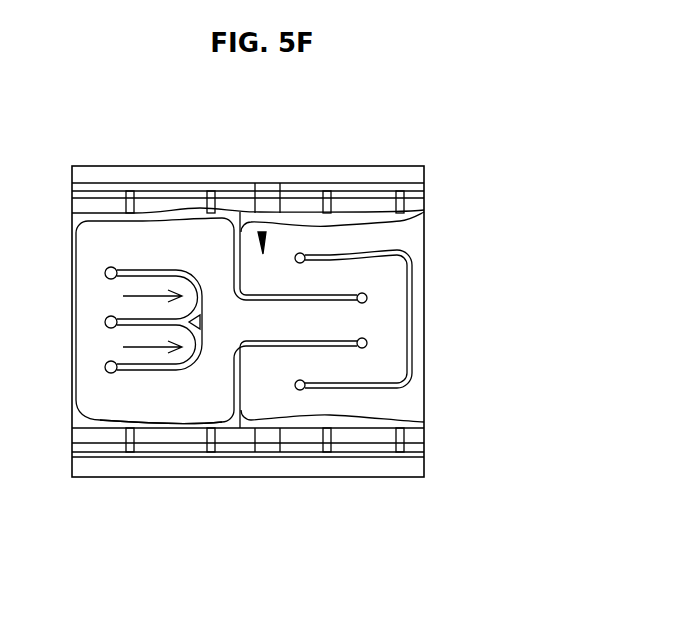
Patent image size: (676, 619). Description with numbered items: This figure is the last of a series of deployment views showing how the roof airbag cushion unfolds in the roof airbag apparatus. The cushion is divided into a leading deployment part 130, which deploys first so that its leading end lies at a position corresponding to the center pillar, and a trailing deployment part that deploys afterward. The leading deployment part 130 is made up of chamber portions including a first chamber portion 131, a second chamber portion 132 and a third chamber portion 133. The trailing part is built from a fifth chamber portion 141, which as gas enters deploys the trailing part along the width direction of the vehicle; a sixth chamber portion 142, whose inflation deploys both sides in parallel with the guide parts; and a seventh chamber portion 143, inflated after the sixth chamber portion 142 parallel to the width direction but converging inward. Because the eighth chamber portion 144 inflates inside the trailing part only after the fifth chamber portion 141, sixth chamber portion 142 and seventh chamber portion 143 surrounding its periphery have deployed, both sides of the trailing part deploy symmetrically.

The leading deployment part 130 is at (261, 233).
The first chamber portion 131 is at (420, 302).
The second chamber portion 132 is at (323, 245).
The third chamber portion 133 is at (338, 273).
The fifth chamber portion 141 is at (223, 362).
The sixth chamber portion 142 is at (178, 410).
The seventh chamber portion 143 is at (73, 395).
The eighth chamber portion 144 is at (145, 332).